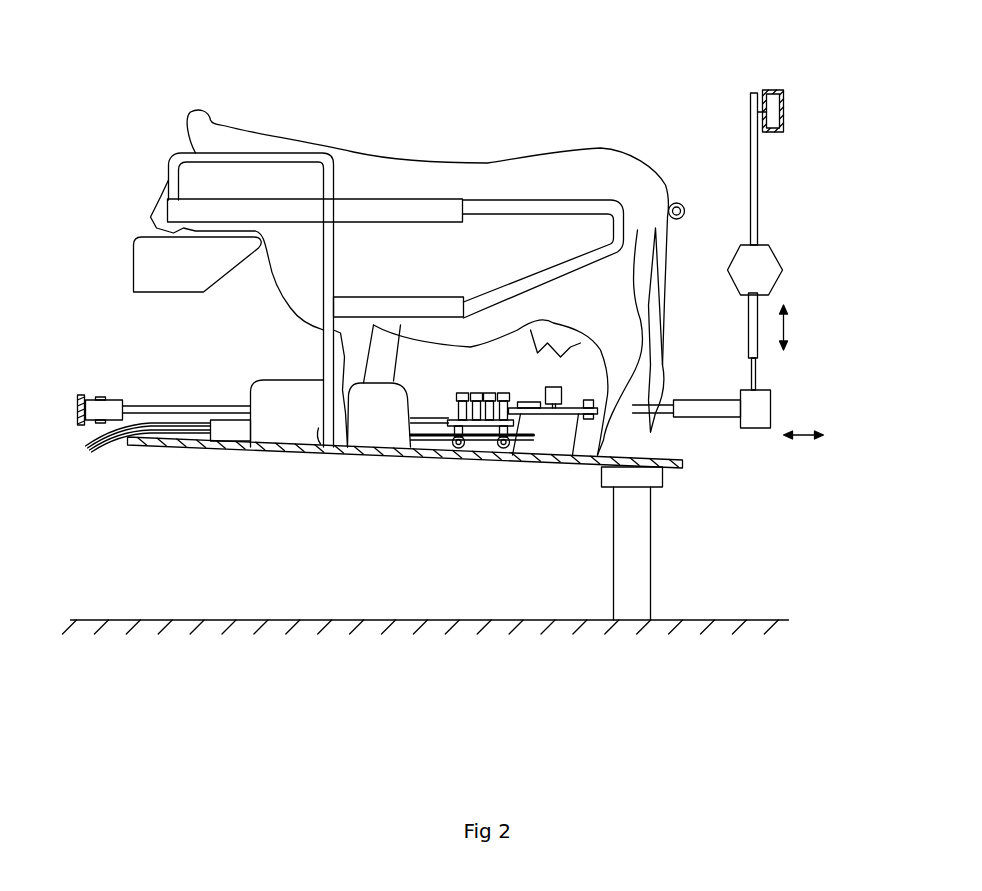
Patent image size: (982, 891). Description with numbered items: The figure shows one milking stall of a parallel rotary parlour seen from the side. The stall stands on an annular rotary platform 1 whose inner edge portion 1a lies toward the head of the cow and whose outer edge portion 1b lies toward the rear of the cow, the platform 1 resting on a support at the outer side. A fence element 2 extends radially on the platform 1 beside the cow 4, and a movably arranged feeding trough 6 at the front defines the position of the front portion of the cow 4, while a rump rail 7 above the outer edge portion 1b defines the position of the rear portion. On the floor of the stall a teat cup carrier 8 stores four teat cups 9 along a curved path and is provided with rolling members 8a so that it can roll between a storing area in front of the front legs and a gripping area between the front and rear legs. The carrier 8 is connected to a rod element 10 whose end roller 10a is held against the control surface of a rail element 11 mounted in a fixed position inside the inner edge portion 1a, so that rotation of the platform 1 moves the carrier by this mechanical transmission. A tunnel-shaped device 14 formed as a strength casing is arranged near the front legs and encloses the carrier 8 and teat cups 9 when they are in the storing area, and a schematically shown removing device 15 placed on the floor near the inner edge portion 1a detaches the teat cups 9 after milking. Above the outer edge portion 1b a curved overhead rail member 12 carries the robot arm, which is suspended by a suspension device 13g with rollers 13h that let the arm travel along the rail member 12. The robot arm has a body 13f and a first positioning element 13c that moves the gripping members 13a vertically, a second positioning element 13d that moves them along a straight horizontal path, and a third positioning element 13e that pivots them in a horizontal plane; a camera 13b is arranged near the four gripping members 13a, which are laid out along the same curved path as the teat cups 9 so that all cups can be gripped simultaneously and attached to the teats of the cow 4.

The rotary platform 1 is at (275, 448).
The inner edge portion 1a is at (127, 440).
The outer edge portion 1b is at (673, 467).
The fence element 2 is at (390, 207).
The cow 4 is at (358, 173).
The feeding trough 6 is at (150, 255).
The rump rail 7 is at (678, 203).
The teat cup carrier 8 is at (483, 423).
The rolling member 8a is at (452, 443).
The teat cup 9 is at (487, 392).
The rod element 10 is at (217, 412).
The roller 10a is at (103, 408).
The rail element 11 is at (80, 397).
The overhead rail member 12 is at (783, 100).
The gripping member 13a is at (520, 413).
The camera 13b is at (555, 390).
The first positioning element 13c is at (753, 350).
The second positioning element 13d is at (697, 407).
The third positioning element 13e is at (573, 420).
The body 13f is at (752, 268).
The suspension device 13g is at (753, 183).
The roller 13h is at (770, 112).
The tunnel-shaped device 14 is at (382, 418).
The removing device 15 is at (225, 428).